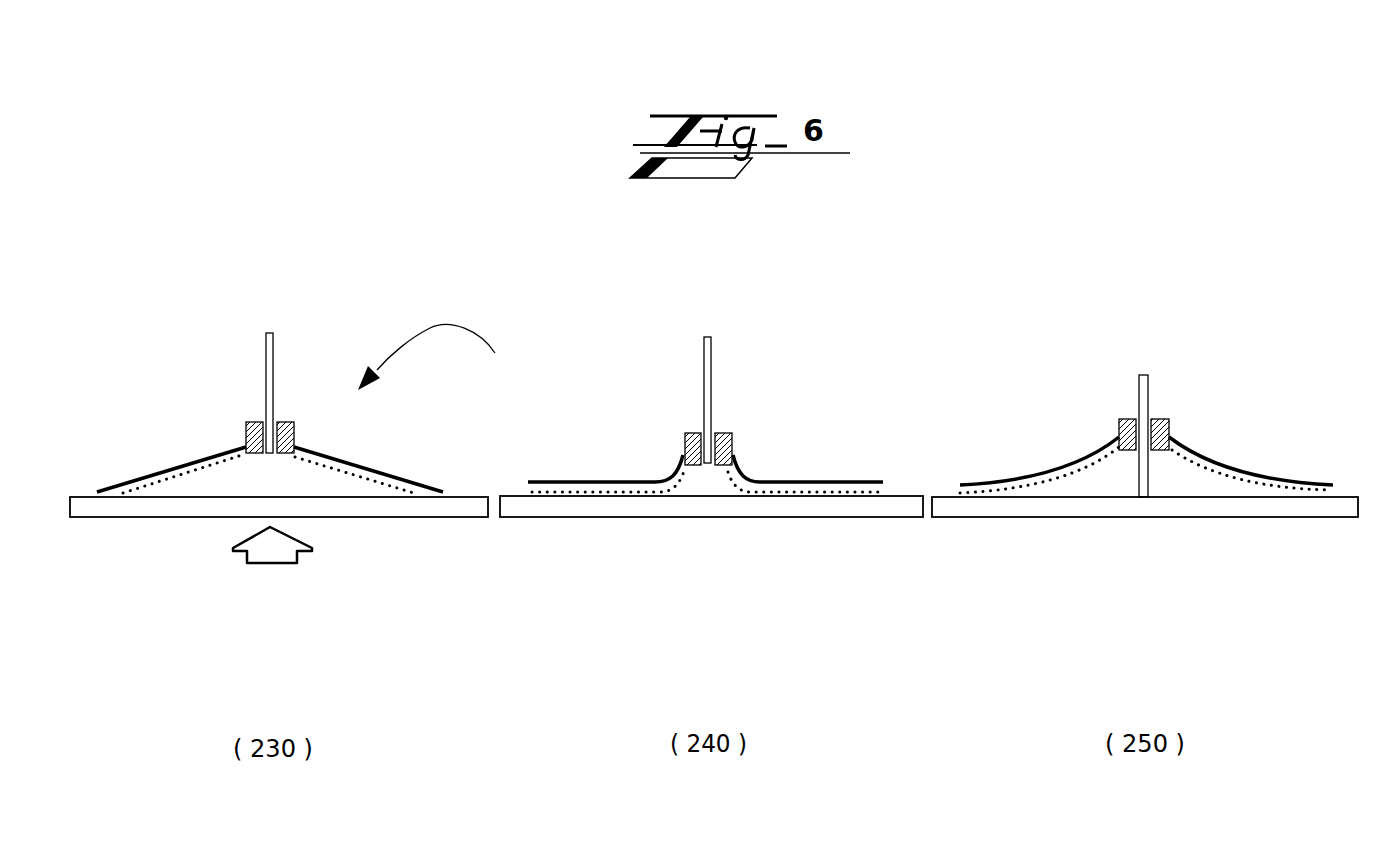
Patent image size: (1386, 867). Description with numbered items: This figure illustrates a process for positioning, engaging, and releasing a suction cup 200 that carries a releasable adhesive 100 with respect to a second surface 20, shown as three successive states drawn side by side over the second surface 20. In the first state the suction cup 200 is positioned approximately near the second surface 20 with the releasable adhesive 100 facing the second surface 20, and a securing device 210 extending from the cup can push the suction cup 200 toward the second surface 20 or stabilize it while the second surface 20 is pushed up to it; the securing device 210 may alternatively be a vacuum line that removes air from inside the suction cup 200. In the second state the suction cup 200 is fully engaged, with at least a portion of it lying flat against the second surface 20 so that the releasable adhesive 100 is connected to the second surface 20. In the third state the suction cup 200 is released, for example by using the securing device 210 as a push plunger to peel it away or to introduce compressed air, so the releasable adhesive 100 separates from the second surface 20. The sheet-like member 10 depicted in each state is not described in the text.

The thermoplastic sheet 10 is at (383, 467).
The second surface 20 is at (355, 517).
The releasable adhesive 100 is at (177, 477).
The suction cup 200 is at (451, 357).
The securing device 210 is at (265, 377).